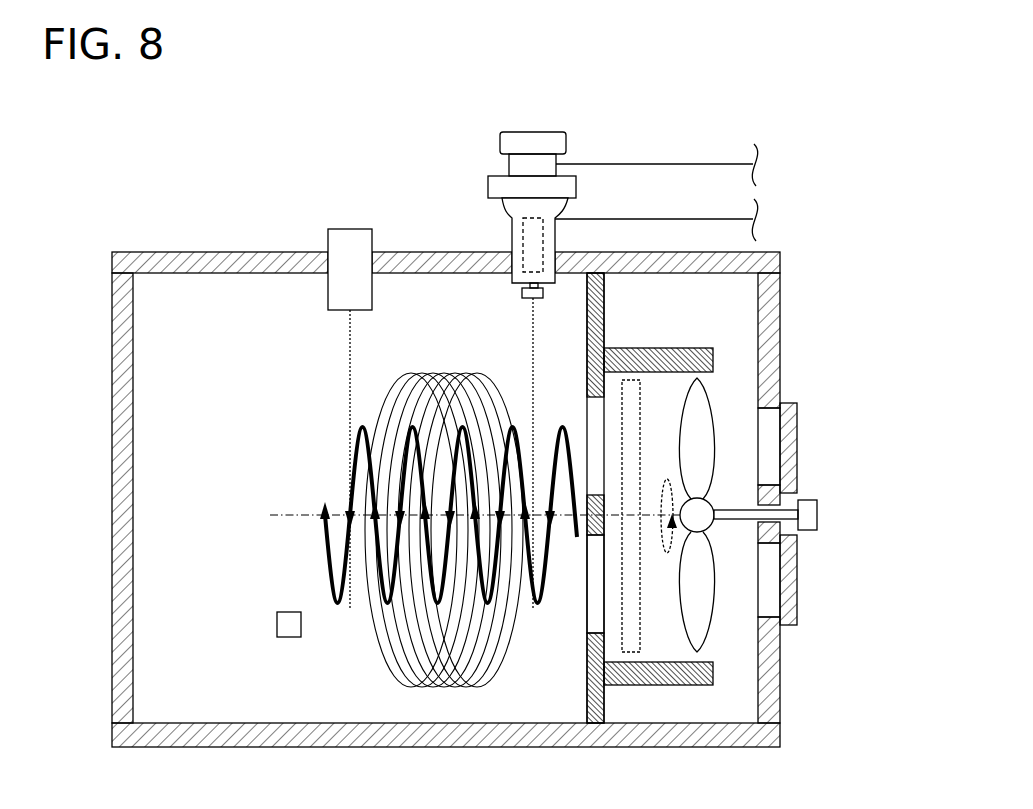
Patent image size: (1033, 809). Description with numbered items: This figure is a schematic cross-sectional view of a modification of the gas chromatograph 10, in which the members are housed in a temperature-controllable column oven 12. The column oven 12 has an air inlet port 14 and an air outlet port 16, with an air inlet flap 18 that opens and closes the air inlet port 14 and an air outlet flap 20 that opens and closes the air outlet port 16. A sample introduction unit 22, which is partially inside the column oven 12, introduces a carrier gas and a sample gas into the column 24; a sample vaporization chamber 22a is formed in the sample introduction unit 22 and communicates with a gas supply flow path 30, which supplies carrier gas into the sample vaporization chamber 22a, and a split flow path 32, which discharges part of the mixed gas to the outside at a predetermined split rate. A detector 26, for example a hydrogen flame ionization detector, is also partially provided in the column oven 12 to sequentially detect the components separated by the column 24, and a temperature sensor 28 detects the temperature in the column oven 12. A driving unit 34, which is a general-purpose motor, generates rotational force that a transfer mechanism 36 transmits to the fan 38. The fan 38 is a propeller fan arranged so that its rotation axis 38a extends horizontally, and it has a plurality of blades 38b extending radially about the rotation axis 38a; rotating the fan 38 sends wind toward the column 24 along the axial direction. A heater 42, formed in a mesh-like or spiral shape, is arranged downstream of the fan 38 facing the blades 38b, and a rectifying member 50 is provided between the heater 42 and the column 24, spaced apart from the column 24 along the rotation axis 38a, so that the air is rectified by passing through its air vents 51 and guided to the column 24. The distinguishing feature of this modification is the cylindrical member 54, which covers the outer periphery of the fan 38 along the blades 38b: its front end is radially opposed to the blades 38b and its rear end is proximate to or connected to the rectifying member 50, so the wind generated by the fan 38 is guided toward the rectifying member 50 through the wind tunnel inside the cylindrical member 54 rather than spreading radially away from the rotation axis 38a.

The gas chromatograph 10 is at (307, 141).
The column oven 12 is at (165, 252).
The air inlet port 14 is at (770, 573).
The air outlet port 16 is at (770, 437).
The air inlet flap 18 is at (798, 578).
The air outlet flap 20 is at (798, 428).
The sample introduction unit 22 is at (566, 146).
The sample vaporization chamber 22a is at (523, 240).
The column 24 is at (367, 641).
The detector 26 is at (328, 240).
The temperature sensor 28 is at (277, 620).
The gas supply flow path 30 is at (675, 164).
The split flow path 32 is at (673, 219).
The driving unit 34 is at (817, 500).
The transfer mechanism 36 is at (752, 521).
The fan 38 is at (712, 503).
The rotation axis 38a is at (657, 514).
The blades 38b is at (710, 398).
The heater 42 is at (640, 628).
The rectifying member 50 is at (587, 643).
The air vents 51 is at (590, 412).
The cylindrical member 54 is at (680, 348).